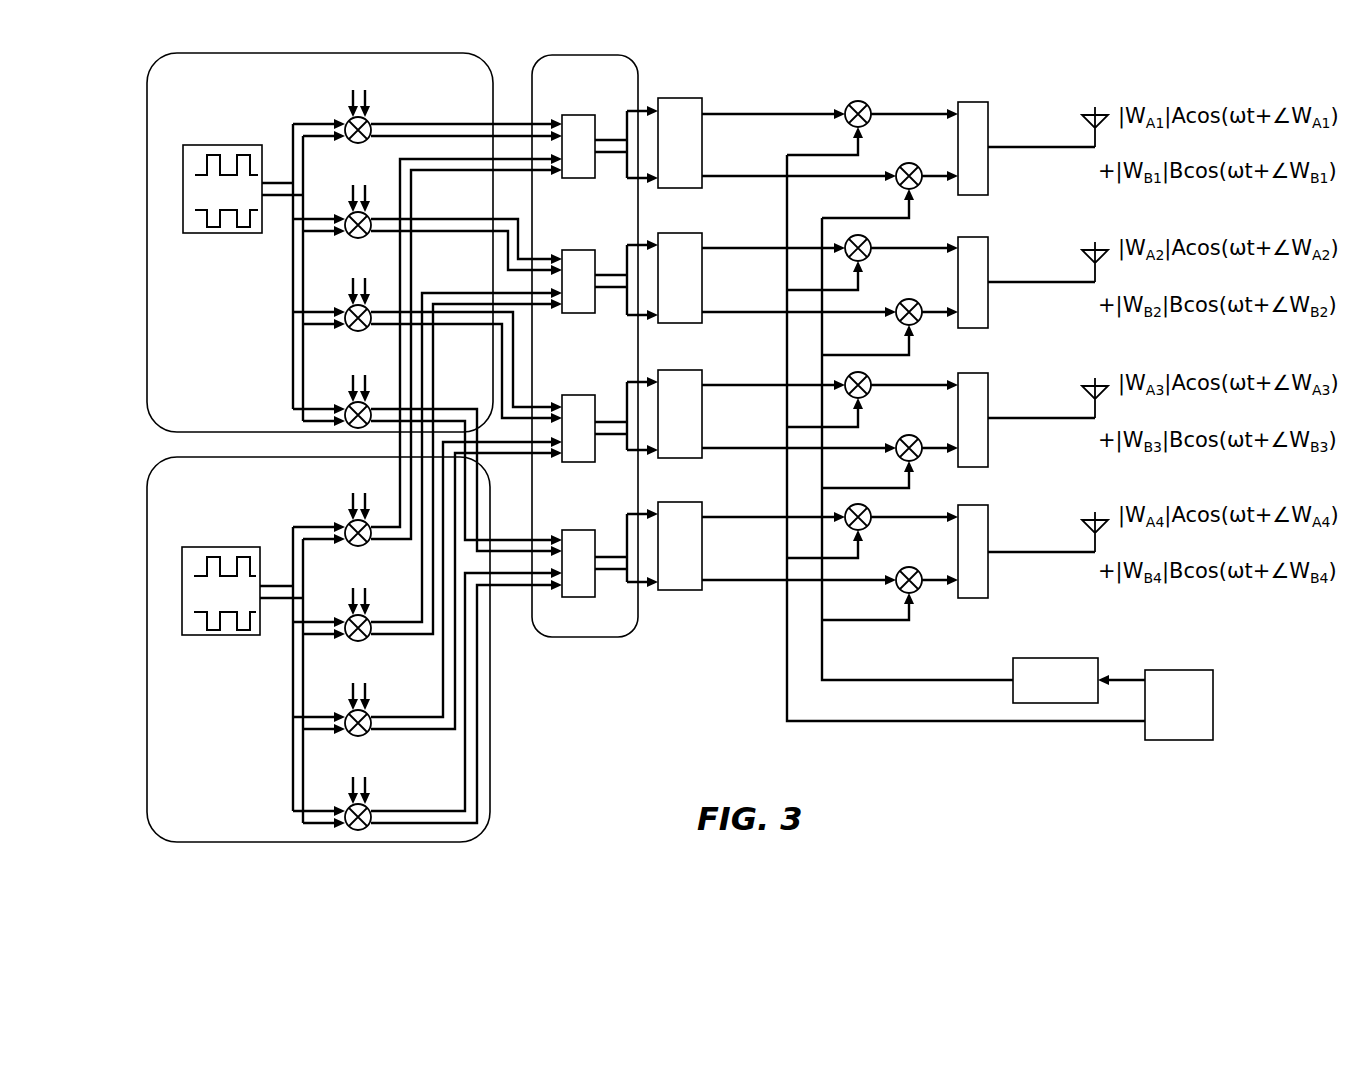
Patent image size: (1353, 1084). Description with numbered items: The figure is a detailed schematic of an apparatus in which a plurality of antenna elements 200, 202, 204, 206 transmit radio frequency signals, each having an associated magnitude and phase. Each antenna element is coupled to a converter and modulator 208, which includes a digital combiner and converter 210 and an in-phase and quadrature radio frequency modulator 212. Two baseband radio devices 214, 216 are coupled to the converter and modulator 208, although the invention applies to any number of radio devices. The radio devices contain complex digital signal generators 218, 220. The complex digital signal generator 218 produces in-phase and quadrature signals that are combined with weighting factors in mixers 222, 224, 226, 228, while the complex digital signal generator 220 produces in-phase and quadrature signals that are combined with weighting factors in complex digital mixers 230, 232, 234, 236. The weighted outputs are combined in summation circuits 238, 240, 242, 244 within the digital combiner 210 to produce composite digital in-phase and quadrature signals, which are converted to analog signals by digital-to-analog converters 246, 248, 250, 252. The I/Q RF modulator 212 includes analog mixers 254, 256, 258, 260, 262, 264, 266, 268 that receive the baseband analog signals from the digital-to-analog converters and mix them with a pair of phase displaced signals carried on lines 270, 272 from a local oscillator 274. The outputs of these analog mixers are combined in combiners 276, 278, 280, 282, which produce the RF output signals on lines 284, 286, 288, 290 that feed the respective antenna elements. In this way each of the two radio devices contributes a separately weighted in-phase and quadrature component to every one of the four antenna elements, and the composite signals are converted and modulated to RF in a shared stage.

The antenna element 200 is at (1094, 107).
The antenna element 202 is at (1094, 247).
The antenna element 204 is at (1094, 378).
The antenna element 206 is at (1094, 512).
The converter and modulator 208 is at (975, 75).
The digital combiner and converter 210 is at (518, 62).
The in-phase and quadrature radio frequency modulator 212 is at (832, 92).
The baseband radio device 214 is at (303, 53).
The baseband radio device 216 is at (490, 775).
The complex digital signal generator 218 is at (220, 145).
The complex digital signal generator 220 is at (220, 547).
The mixer 222 is at (368, 118).
The mixer 224 is at (347, 214).
The mixer 226 is at (347, 307).
The mixer 228 is at (347, 402).
The complex digital mixer 230 is at (347, 520).
The complex digital mixer 232 is at (347, 616).
The complex digital mixer 234 is at (347, 710).
The complex digital mixer 236 is at (347, 804).
The summation circuit 238 is at (577, 178).
The summation circuit 240 is at (577, 313).
The summation circuit 242 is at (577, 462).
The summation circuit 244 is at (577, 597).
The digital-to-analog converter 246 is at (673, 188).
The digital-to-analog converter 248 is at (673, 323).
The digital-to-analog converter 250 is at (673, 458).
The digital-to-analog converter 252 is at (673, 590).
The analog mixer 254 is at (868, 102).
The analog mixer 256 is at (911, 163).
The analog mixer 258 is at (869, 240).
The analog mixer 260 is at (911, 298).
The analog mixer 262 is at (869, 377).
The analog mixer 264 is at (911, 435).
The analog mixer 266 is at (869, 509).
The analog mixer 268 is at (911, 567).
The line 270 is at (787, 700).
The line 272 is at (822, 648).
The local oscillator 274 is at (1213, 712).
The combiner 276 is at (988, 183).
The combiner 278 is at (988, 313).
The combiner 280 is at (988, 450).
The combiner 282 is at (988, 585).
The line 284 is at (1022, 142).
The line 286 is at (1022, 279).
The line 288 is at (1022, 415).
The line 290 is at (1022, 549).